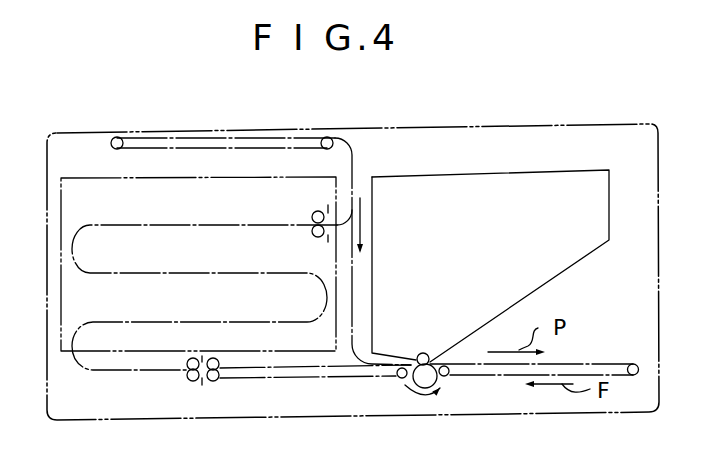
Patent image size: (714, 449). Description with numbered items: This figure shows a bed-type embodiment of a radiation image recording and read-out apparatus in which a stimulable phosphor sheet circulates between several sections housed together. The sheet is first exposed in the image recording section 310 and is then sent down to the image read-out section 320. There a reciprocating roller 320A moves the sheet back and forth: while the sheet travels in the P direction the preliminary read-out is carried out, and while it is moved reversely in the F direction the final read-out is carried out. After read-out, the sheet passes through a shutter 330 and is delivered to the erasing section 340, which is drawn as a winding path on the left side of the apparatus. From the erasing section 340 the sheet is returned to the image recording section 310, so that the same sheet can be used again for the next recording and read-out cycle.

The image recording section 310 is at (259, 127).
The image read-out section 320 is at (436, 346).
The reciprocating roller 320A is at (388, 388).
The shutter 330 is at (200, 386).
The erasing section 340 is at (222, 260).